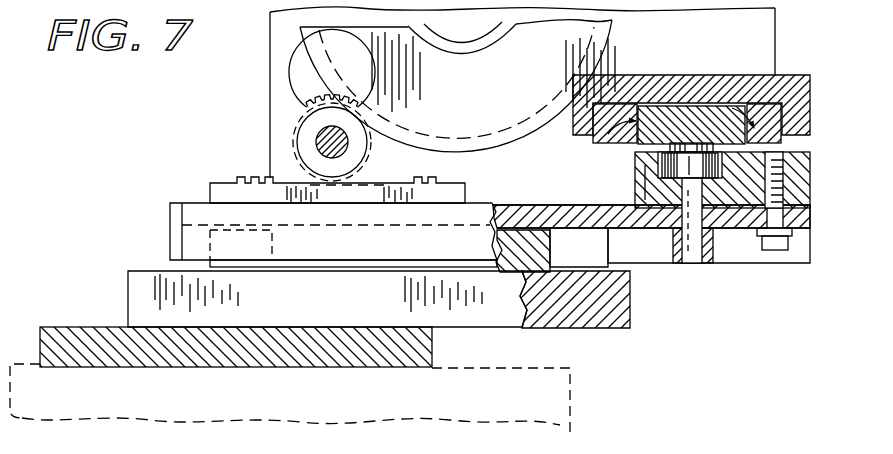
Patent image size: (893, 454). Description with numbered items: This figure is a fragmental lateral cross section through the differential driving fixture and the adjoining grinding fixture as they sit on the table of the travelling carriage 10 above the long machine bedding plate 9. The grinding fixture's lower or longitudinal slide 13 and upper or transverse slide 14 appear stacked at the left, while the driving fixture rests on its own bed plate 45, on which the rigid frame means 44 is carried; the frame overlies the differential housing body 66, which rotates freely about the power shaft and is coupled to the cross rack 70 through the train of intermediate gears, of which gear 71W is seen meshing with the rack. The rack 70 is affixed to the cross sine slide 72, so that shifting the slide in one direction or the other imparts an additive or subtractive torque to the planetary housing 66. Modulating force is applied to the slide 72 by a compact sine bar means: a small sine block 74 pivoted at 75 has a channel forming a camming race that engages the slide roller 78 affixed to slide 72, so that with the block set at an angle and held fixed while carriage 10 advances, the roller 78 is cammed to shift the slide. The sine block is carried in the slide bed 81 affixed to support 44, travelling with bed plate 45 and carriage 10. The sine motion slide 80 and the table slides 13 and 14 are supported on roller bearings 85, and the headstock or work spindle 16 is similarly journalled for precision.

The frame means 44 is at (730, 40).
The differential housing body 66 is at (477, 107).
The intermediate gear 71W is at (300, 112).
The cross rack 70 is at (248, 175).
The upper or transverse slide 14 is at (203, 210).
The lower or longitudinal slide 13 is at (227, 243).
The bed plate 45 is at (143, 287).
The long machine bedding plate 9 is at (423, 342).
The travelling carriage 10 is at (547, 367).
The slide bed 81 is at (788, 78).
The sine motion slide 80 is at (663, 120).
The roller bearings 85 is at (608, 134).
The pivot 75 is at (688, 147).
The slide roller 78 is at (672, 165).
The headstock or work spindle 16 is at (663, 183).
The sine block 74 is at (802, 187).
The cross sine slide 72 is at (742, 228).